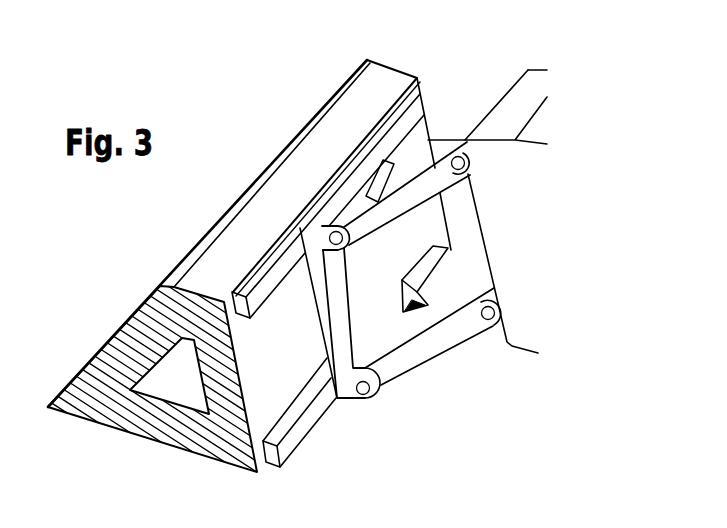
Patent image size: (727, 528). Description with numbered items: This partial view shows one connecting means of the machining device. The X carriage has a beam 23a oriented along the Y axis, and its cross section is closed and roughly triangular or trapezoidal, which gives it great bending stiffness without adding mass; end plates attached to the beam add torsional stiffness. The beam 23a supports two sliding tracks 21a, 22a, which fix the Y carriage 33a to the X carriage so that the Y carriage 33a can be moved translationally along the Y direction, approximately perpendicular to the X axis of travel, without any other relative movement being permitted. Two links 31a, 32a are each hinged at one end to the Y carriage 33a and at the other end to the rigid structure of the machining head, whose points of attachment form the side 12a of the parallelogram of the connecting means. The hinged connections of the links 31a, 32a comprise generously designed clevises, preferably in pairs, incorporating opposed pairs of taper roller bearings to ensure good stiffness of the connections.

The side of the parallelogram 12a is at (490, 140).
The sliding track 21a is at (403, 120).
The sliding track 22a is at (290, 432).
The beam 23a is at (190, 248).
The link 31a is at (453, 130).
The link 32a is at (440, 336).
The Y carriage 33a is at (363, 333).